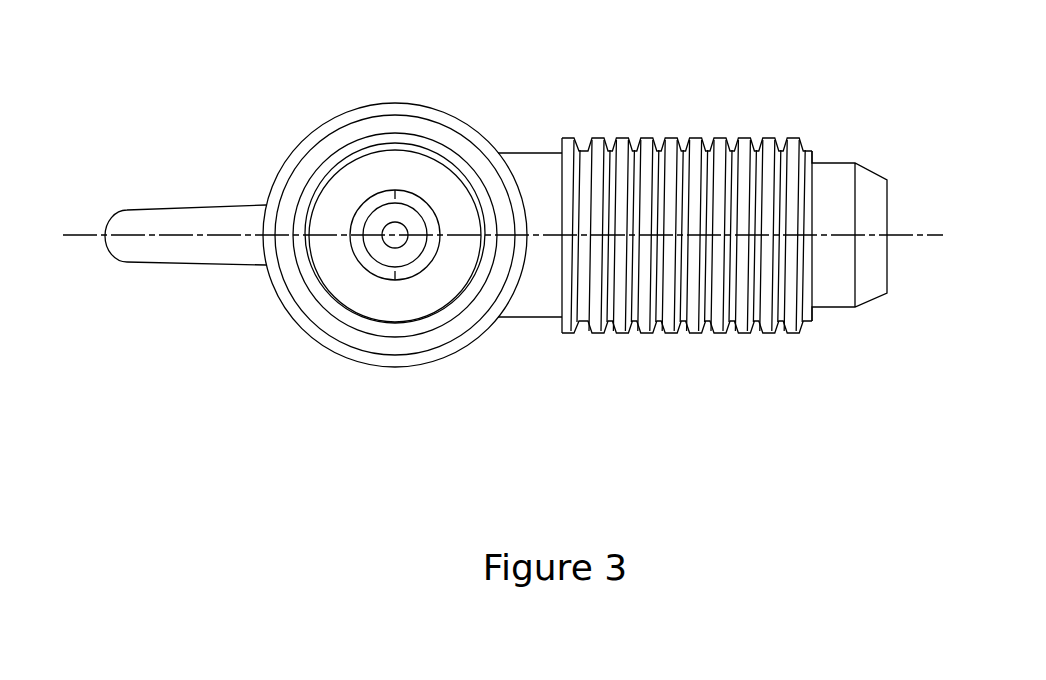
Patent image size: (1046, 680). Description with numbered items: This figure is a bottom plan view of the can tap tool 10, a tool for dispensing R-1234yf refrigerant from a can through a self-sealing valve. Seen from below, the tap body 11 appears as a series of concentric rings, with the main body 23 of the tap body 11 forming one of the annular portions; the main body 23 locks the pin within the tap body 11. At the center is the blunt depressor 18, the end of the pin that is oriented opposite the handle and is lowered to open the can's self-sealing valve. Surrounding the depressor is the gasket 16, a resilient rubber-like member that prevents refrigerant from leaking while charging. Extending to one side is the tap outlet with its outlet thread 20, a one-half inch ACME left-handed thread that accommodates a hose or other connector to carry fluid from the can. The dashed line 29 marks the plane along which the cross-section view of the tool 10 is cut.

The can tap tool 10 is at (345, 453).
The tap body 11 is at (310, 134).
The gasket 16 is at (443, 283).
The blunt depressor 18 is at (392, 232).
The outlet thread 20 is at (652, 138).
The main body 23 is at (328, 320).
The line 29 is at (63, 235).